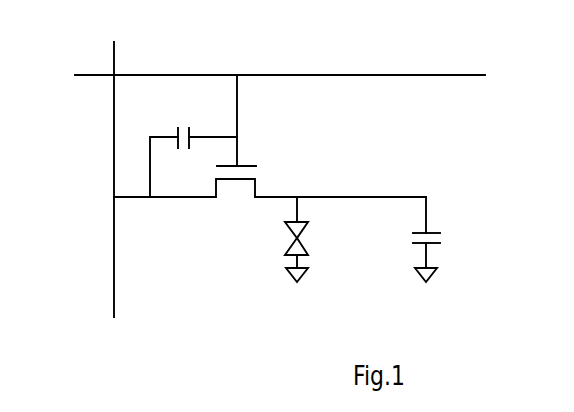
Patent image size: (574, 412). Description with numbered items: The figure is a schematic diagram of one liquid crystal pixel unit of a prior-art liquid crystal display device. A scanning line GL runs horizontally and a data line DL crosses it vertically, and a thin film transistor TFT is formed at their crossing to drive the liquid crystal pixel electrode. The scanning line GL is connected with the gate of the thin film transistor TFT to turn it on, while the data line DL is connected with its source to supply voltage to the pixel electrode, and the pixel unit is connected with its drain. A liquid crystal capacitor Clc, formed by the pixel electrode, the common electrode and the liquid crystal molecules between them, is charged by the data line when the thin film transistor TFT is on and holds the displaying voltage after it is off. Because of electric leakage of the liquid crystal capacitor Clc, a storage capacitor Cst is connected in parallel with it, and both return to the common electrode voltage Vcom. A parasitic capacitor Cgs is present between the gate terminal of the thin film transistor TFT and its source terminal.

The data line DL is at (113, 162).
The scanning line GL is at (257, 75).
The thin film transistor TFT is at (260, 136).
The parasitic capacitor Cgs is at (193, 142).
The liquid crystal capacitor Clc is at (270, 232).
The storage capacitor Cst is at (453, 232).
The common electrode voltage Vcom is at (361, 293).